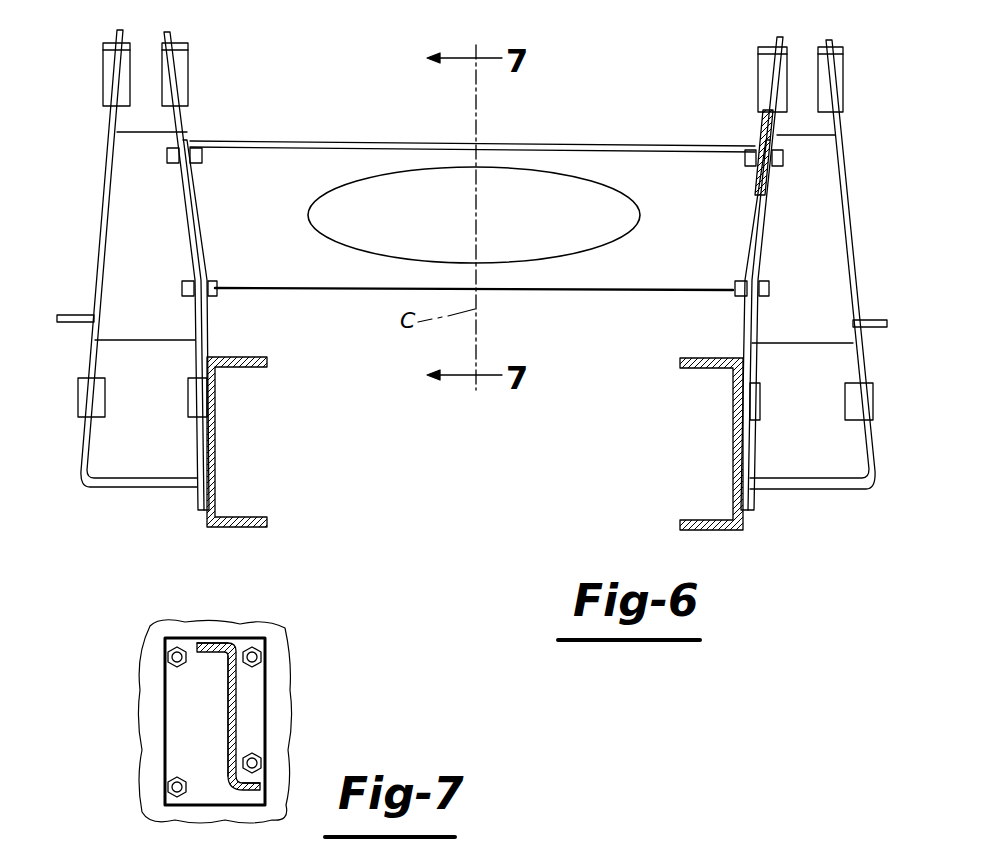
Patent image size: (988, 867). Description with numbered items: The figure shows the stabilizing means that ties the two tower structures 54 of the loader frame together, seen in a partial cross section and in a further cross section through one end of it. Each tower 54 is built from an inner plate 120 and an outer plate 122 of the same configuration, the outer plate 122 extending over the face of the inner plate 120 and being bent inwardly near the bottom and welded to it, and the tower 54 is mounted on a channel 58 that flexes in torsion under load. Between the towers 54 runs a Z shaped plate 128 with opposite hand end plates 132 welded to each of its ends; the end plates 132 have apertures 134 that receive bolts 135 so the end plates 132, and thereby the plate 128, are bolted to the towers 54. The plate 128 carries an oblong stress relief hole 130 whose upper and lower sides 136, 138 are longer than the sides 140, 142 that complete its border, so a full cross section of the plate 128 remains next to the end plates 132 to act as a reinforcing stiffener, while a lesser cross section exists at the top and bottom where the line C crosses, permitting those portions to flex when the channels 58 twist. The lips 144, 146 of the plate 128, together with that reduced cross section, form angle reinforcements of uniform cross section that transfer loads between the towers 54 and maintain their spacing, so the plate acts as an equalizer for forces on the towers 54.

In FIG. 6, the tower structure 54 is at (173, 27).
In FIG. 6, the channel 58 is at (238, 362).
In FIG. 6, the inner plate 120 is at (192, 233).
In FIG. 6, the outer plate 122 is at (103, 212).
In FIG. 6, the Z shaped plate 128 is at (686, 122).
In FIG. 7, the Z shaped plate 128 is at (232, 648).
In FIG. 6, the stress relief hole 130 is at (416, 185).
In FIG. 7, the stress relief hole 130 is at (226, 766).
In FIG. 6, the end plate 132 is at (199, 199).
In FIG. 7, the end plate 132 is at (181, 722).
In FIG. 6, the aperture 134 is at (759, 195).
In FIG. 6, the bolts and nuts 135 is at (203, 157).
In FIG. 7, the bolts and nuts 135 is at (168, 657).
In FIG. 6, the upper side 136 is at (506, 178).
In FIG. 6, the lower side 138 is at (532, 264).
In FIG. 6, the side 140 is at (312, 218).
In FIG. 6, the side 142 is at (632, 218).
In FIG. 7, the lip 144 is at (211, 645).
In FIG. 7, the lip 146 is at (248, 790).